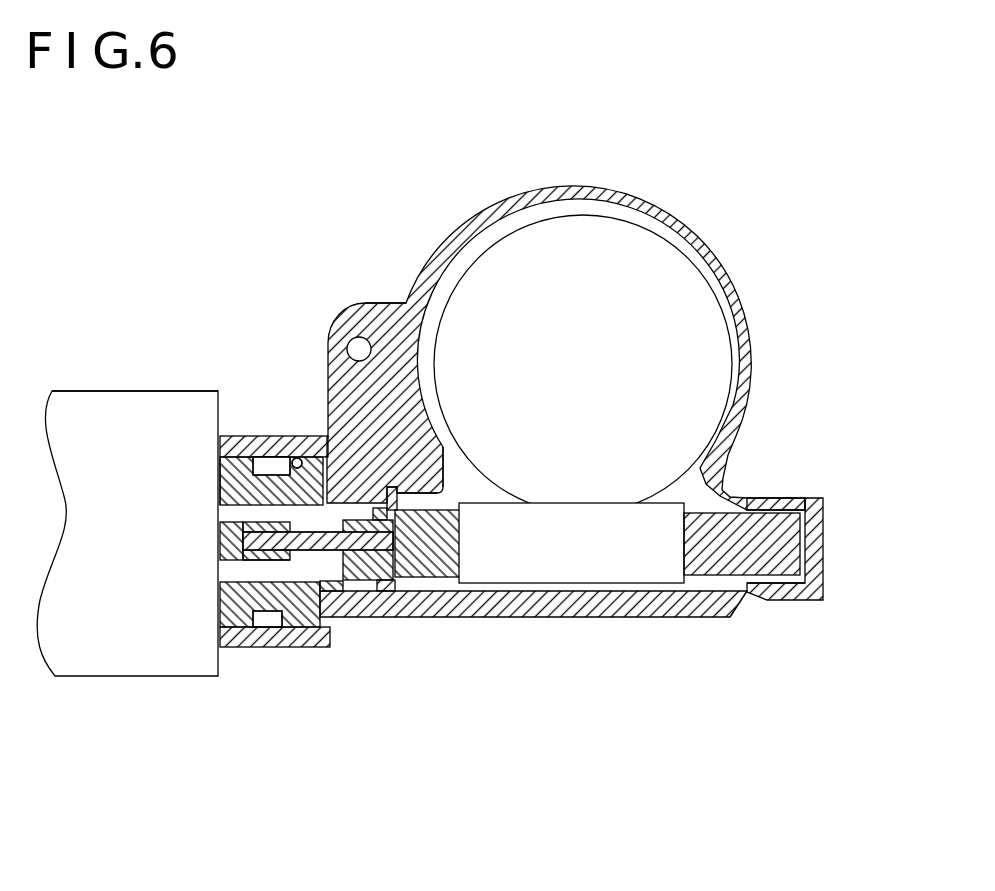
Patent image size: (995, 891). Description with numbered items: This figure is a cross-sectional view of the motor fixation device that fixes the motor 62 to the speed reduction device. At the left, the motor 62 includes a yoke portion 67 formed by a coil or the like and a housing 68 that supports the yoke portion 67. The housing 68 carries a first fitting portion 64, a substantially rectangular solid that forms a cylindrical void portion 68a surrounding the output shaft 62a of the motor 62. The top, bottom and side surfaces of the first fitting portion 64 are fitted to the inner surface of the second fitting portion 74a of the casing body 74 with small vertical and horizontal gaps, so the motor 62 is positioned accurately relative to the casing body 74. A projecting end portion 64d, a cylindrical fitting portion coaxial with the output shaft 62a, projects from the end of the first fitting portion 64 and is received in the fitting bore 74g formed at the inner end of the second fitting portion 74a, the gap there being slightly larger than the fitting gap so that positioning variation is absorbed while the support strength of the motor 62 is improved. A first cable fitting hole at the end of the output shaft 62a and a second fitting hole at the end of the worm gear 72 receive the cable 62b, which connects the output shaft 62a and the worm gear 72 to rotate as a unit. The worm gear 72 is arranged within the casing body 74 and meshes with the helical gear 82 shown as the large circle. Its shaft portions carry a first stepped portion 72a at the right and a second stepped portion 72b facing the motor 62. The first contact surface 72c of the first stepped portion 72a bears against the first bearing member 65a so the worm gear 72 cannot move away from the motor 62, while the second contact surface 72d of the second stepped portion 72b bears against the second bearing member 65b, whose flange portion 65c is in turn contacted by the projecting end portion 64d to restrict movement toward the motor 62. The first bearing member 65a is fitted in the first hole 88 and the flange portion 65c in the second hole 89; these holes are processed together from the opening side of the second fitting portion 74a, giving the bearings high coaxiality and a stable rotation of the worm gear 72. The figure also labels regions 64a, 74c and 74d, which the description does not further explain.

The motor 62 is at (79, 382).
The yoke portion 67 is at (113, 422).
The output shaft 62a is at (232, 440).
The cable 62b is at (308, 550).
The first fitting portion 64 is at (226, 645).
The support flange 64a is at (300, 462).
The projecting end portion 64d is at (391, 303).
The first bearing member 65a is at (780, 497).
The second bearing member 65b is at (378, 618).
The flange portion 65c is at (418, 396).
The housing 68 is at (243, 640).
The cylindrical void portion 68a is at (237, 575).
The worm gear 72 is at (430, 575).
The first stepped portion 72a is at (739, 598).
The second stepped portion 72b is at (408, 502).
The first contact surface 72c is at (768, 600).
The second contact surface 72d is at (398, 600).
The casing body 74 is at (452, 247).
The second fitting portion 74a is at (305, 436).
The holder recess 74c is at (265, 462).
The holder recess 74d is at (270, 620).
The fitting bore 74g is at (357, 617).
The helical gear 82 is at (660, 277).
The first hole 88 is at (790, 598).
The second hole 89 is at (403, 443).